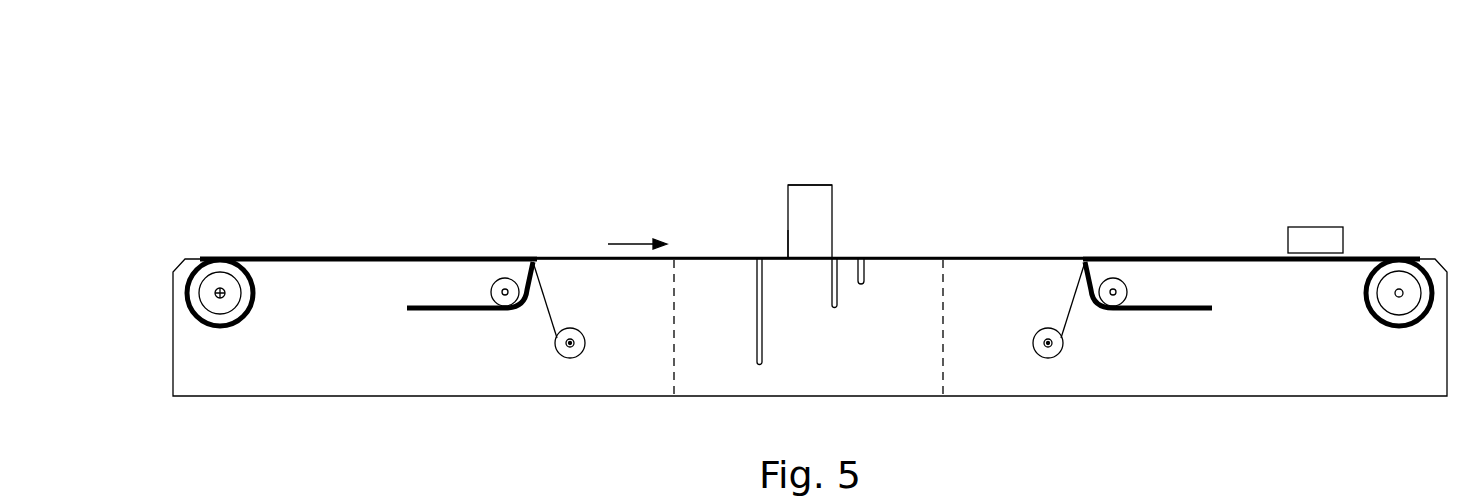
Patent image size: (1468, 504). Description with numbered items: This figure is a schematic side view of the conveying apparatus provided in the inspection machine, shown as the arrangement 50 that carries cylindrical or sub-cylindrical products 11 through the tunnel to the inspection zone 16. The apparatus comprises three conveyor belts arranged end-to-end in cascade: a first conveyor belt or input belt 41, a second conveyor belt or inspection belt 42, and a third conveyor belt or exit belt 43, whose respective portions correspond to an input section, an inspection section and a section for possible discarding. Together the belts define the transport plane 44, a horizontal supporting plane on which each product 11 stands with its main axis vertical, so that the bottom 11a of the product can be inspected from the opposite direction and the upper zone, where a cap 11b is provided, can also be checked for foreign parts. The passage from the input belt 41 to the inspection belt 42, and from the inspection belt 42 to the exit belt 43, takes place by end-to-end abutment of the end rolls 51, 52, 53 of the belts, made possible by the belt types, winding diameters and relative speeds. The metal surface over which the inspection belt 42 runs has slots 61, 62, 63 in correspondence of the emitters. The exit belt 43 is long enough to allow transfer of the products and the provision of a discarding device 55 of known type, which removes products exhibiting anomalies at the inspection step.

The conveying apparatus 50 is at (268, 108).
The inspection zone 16 is at (925, 375).
The transport plane 44 is at (408, 230).
The inspection belt 42 is at (1008, 262).
The input belt 41 is at (275, 264).
The exit belt 43 is at (1188, 264).
The end roll 51 is at (525, 265).
The end roll 52 is at (537, 263).
The end roll 53 is at (1098, 262).
The product 11 is at (826, 215).
The bottom of the product 11a is at (803, 250).
The cap 11b is at (805, 185).
The slot 61 is at (864, 273).
The slot 62 is at (757, 313).
The slot 63 is at (832, 296).
The discarding device 55 is at (1313, 232).